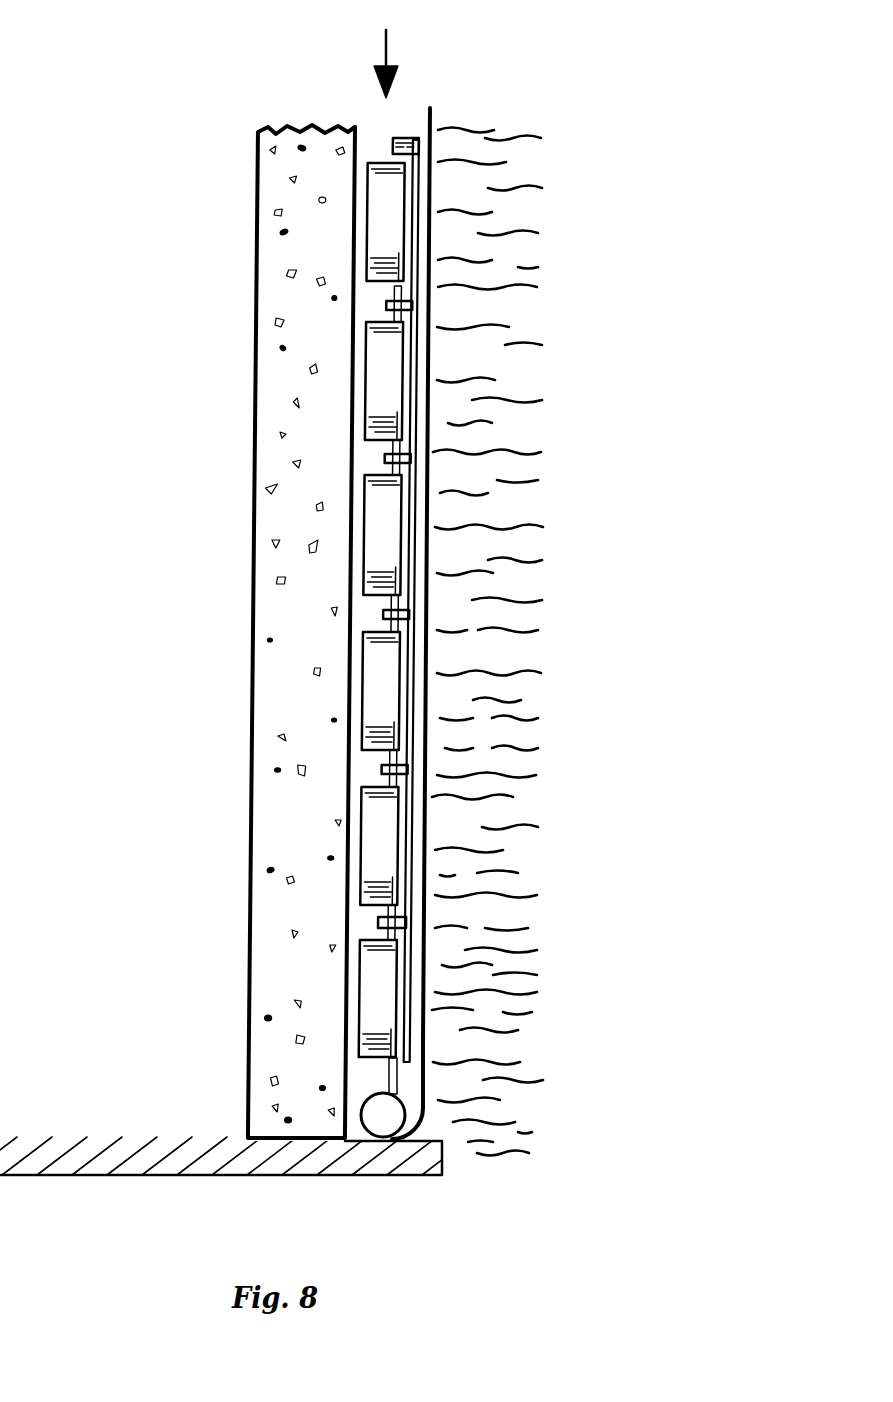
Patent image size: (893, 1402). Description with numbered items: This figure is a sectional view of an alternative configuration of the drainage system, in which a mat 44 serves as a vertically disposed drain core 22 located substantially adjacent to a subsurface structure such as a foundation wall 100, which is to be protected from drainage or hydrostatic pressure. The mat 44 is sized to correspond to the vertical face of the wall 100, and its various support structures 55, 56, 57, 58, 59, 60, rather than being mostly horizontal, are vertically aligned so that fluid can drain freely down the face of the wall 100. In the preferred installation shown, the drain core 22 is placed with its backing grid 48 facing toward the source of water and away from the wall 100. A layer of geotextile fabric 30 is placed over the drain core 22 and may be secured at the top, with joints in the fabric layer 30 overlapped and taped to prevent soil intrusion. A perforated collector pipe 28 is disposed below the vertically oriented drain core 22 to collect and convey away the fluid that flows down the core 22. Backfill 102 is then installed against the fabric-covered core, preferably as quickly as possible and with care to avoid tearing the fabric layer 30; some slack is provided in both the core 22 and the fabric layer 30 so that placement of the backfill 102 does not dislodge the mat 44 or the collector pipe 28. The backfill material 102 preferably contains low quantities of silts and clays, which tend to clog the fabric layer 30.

The drain core 22 is at (388, 49).
The perforated collector pipe 28 is at (387, 1123).
The geotextile fabric 30 is at (426, 820).
The mat 44 is at (394, 613).
The backing grid 48 is at (418, 622).
The support structure 55 is at (385, 245).
The support structure 56 is at (383, 378).
The support structure 57 is at (380, 543).
The support structure 58 is at (378, 710).
The support structure 59 is at (375, 847).
The support structure 60 is at (375, 1012).
The foundation wall 100 is at (300, 585).
The backfill 102 is at (518, 177).